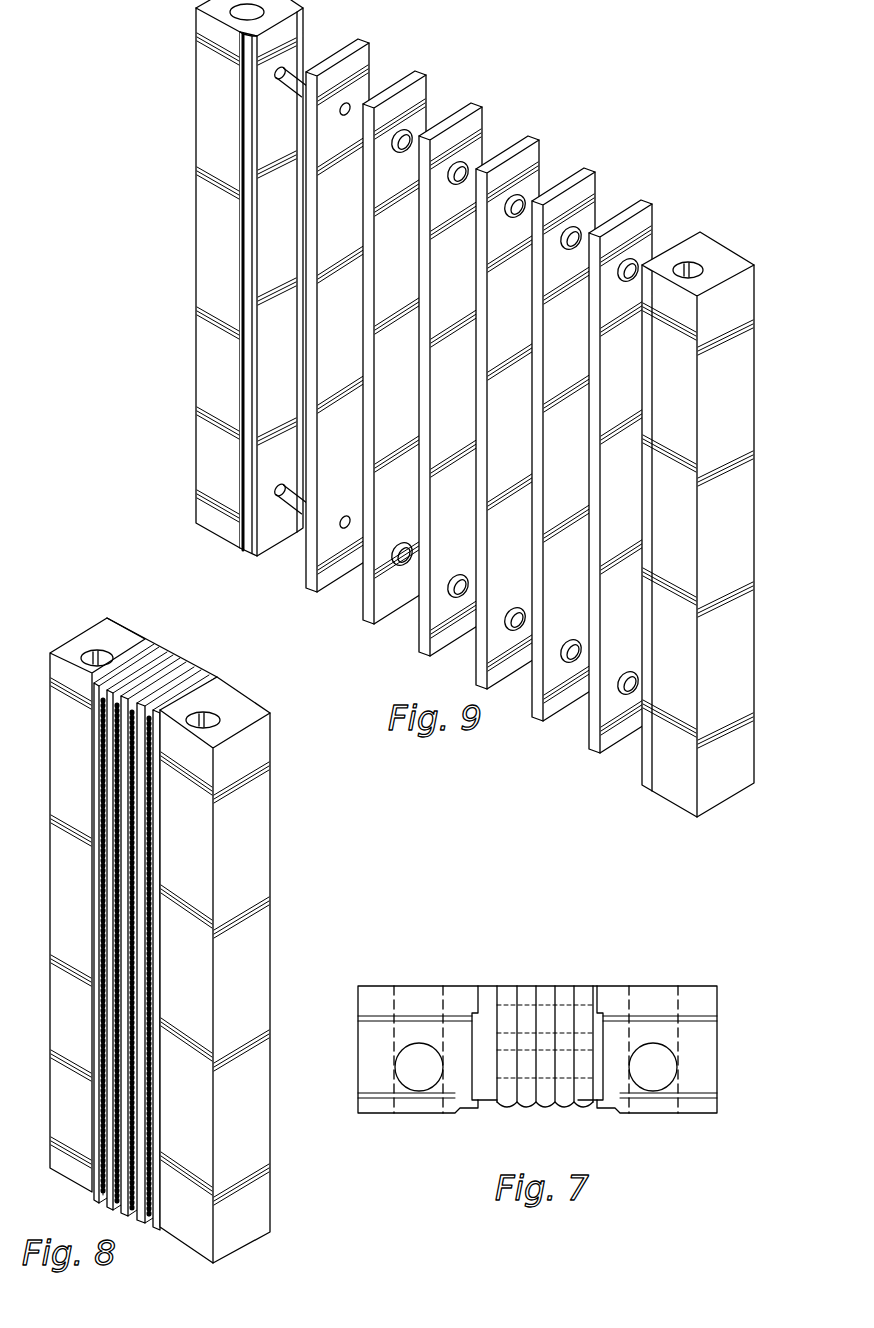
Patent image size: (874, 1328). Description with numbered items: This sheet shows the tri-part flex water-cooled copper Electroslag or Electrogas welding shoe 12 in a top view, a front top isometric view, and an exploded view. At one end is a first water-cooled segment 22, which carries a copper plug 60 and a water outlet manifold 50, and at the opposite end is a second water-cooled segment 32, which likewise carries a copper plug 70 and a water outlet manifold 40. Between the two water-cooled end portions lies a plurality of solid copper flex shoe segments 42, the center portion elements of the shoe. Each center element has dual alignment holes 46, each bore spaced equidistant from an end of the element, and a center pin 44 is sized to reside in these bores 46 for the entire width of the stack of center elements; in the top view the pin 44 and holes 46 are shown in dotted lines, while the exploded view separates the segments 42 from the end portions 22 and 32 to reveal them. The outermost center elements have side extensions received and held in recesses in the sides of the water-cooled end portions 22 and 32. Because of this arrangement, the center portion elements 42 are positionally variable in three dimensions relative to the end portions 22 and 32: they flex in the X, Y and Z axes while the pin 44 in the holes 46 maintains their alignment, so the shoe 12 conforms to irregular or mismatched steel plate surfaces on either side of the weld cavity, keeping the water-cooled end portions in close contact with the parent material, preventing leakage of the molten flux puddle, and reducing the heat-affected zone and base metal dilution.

In FIG. 9, the tri-part flex water-cooled copper welding shoe 12 is at (482, 408).
In FIG. 8, the tri-part flex water-cooled copper welding shoe 12 is at (198, 929).
In FIG. 7, the tri-part flex water-cooled copper welding shoe 12 is at (531, 1022).
In FIG. 9, the first water-cooled segment 22 is at (212, 470).
In FIG. 8, the first water-cooled segment 22 is at (97, 893).
In FIG. 7, the first water-cooled segment 22 is at (403, 1047).
In FIG. 9, the second water-cooled segment 32 is at (728, 518).
In FIG. 8, the second water-cooled segment 32 is at (235, 967).
In FIG. 7, the second water-cooled segment 32 is at (666, 1037).
In FIG. 7, the water outlet manifold 40 is at (673, 1005).
In FIG. 9, the flex shoe segments 42 is at (498, 376).
In FIG. 8, the flex shoe segments 42 is at (170, 646).
In FIG. 7, the flex shoe segments 42 is at (537, 1044).
In FIG. 9, the center pin 44 is at (290, 73).
In FIG. 7, the center pin 44 is at (538, 1052).
In FIG. 9, the alignment holes 46 is at (402, 140).
In FIG. 7, the alignment holes 46 is at (508, 1052).
In FIG. 7, the water outlet manifold 50 is at (408, 998).
In FIG. 8, the copper plug 60 is at (95, 653).
In FIG. 7, the copper plug 60 is at (417, 1076).
In FIG. 9, the copper plug 70 is at (690, 262).
In FIG. 8, the copper plug 70 is at (215, 722).
In FIG. 7, the copper plug 70 is at (652, 1076).